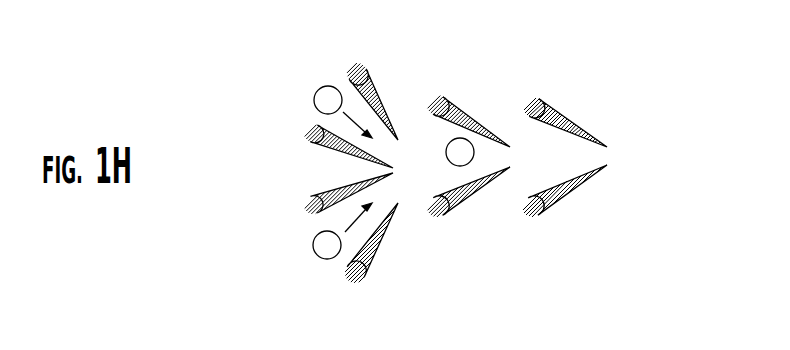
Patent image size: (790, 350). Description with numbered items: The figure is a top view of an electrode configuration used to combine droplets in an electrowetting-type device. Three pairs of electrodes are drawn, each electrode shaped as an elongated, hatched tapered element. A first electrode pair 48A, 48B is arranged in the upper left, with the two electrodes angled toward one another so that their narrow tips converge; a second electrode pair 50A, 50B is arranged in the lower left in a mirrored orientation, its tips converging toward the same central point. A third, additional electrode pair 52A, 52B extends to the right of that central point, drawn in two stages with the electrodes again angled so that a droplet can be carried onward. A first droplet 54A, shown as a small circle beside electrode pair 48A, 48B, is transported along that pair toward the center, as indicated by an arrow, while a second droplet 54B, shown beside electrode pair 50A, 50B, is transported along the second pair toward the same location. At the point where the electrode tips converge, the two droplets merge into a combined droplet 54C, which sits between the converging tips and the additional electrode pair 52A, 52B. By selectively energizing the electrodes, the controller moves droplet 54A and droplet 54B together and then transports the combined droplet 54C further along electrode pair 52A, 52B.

The electrode 48A is at (307, 136).
The electrode 48B is at (378, 93).
The electrode 50A is at (307, 202).
The electrode 50B is at (377, 250).
The electrode 52A is at (463, 100).
The electrode 52B is at (460, 205).
The droplet 54A is at (336, 87).
The droplet 54B is at (327, 260).
The combined droplet 54C is at (446, 156).